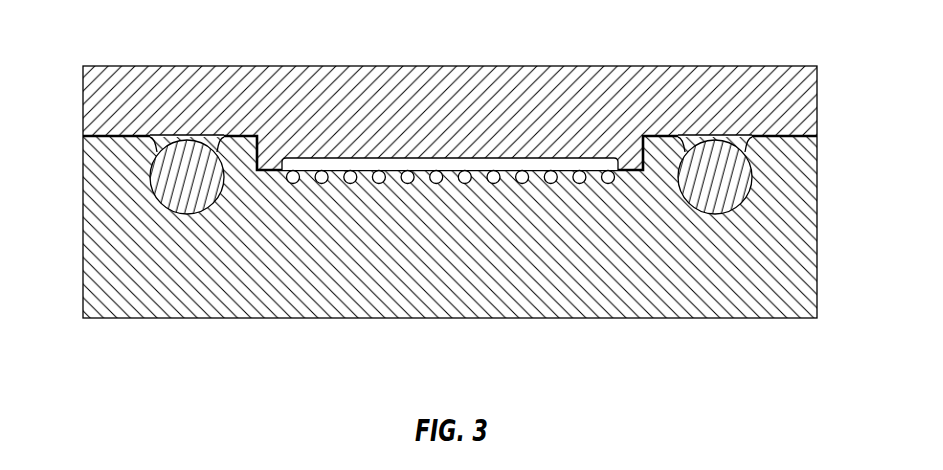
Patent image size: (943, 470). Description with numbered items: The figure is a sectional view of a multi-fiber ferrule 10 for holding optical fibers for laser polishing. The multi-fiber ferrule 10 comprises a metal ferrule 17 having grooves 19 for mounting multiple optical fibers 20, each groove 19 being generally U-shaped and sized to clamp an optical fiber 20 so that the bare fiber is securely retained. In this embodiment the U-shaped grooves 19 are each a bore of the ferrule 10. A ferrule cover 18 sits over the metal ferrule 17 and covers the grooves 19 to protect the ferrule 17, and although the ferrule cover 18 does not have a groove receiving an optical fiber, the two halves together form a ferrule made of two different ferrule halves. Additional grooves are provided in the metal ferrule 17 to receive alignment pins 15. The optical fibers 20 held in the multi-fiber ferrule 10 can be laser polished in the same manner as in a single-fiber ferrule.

The multi-fiber ferrule 10 is at (127, 38).
The alignment pins 15 is at (177, 180).
The metal ferrule 17 is at (383, 302).
The ferrule cover 18 is at (453, 83).
The grooves 19 is at (494, 176).
The optical fibers 20 is at (408, 180).